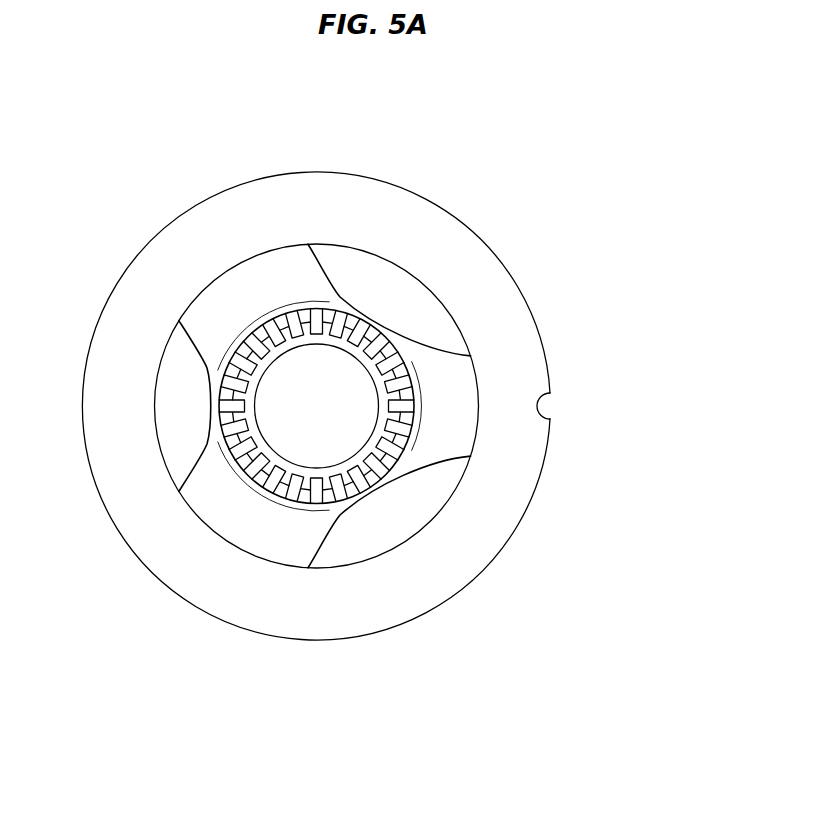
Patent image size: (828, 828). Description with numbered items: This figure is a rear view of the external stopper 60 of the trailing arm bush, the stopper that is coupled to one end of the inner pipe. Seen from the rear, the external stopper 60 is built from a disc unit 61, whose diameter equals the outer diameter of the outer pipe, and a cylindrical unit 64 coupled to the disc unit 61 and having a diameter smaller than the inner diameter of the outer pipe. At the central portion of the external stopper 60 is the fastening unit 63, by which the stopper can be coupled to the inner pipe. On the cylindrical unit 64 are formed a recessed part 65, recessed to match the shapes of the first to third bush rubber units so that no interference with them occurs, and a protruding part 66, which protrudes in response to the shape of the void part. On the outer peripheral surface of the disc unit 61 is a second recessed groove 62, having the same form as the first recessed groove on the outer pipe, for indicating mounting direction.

The external stopper 60 is at (503, 132).
The disc unit 61 is at (492, 308).
The second recessed groove 62 is at (537, 405).
The fastening unit 63 is at (272, 333).
The cylindrical unit 64 is at (317, 496).
The recessed part 65 is at (253, 530).
The protruding part 66 is at (348, 538).